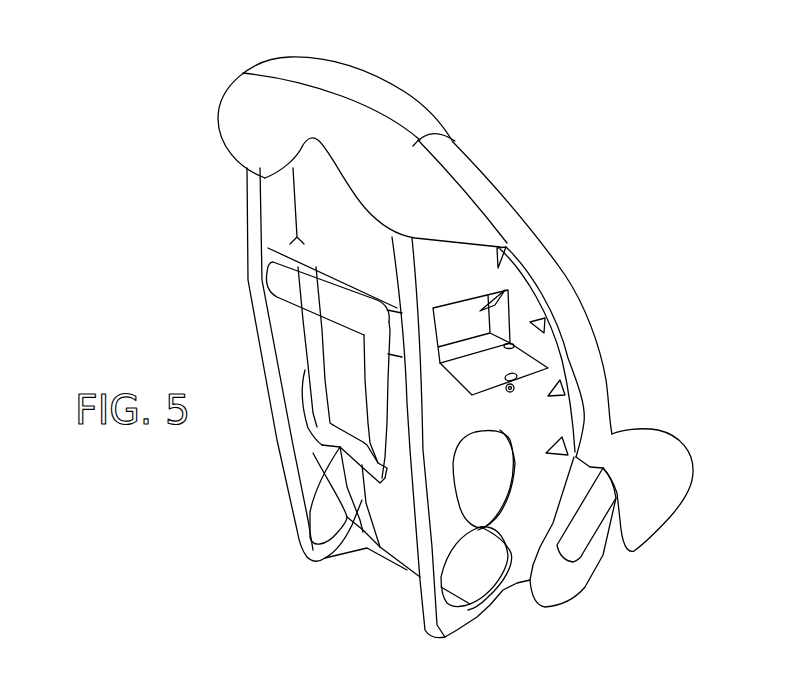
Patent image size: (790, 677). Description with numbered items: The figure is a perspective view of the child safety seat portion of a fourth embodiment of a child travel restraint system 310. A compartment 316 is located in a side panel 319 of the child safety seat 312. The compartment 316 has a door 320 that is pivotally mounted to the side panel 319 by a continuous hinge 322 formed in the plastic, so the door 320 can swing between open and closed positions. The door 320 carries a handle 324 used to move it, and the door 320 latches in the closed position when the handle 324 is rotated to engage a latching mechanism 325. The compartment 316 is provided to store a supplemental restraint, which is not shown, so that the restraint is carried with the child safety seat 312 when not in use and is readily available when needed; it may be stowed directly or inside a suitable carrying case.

The child travel restraint system 310 is at (241, 543).
The child safety seat 312 is at (330, 548).
The compartment 316 is at (483, 306).
The side panel 319 is at (480, 262).
The door 320 is at (514, 362).
The continuous hinge 322 is at (562, 340).
The handle 324 is at (518, 388).
The latching mechanism 325 is at (514, 347).